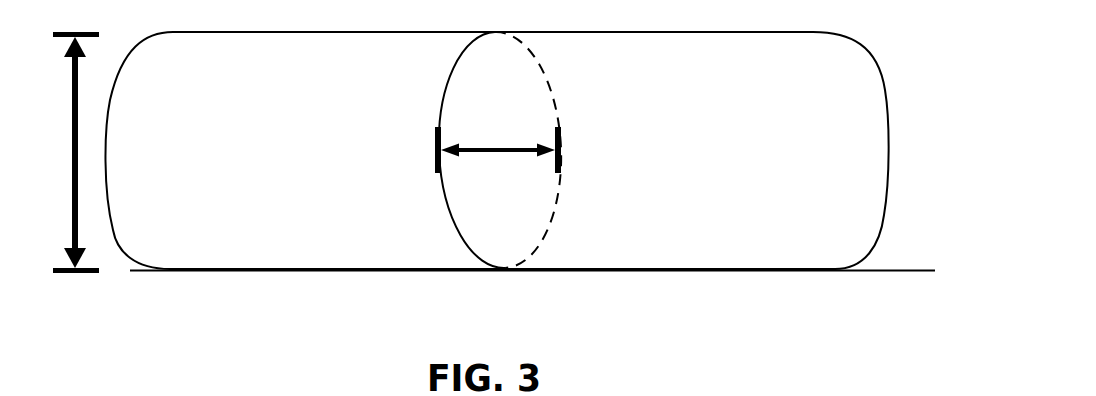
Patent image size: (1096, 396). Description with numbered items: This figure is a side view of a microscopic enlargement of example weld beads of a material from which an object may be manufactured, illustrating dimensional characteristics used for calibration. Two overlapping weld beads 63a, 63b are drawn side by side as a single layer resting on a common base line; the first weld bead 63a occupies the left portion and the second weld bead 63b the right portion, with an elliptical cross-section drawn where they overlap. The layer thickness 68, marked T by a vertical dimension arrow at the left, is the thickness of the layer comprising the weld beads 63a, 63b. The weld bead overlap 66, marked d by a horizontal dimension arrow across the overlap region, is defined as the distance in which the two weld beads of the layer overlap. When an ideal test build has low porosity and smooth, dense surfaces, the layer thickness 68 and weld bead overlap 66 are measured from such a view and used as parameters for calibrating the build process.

The weld bead 63a is at (307, 245).
The weld bead 63b is at (708, 245).
The weld bead overlap 66 is at (476, 153).
The layer thickness 68 is at (72, 115).